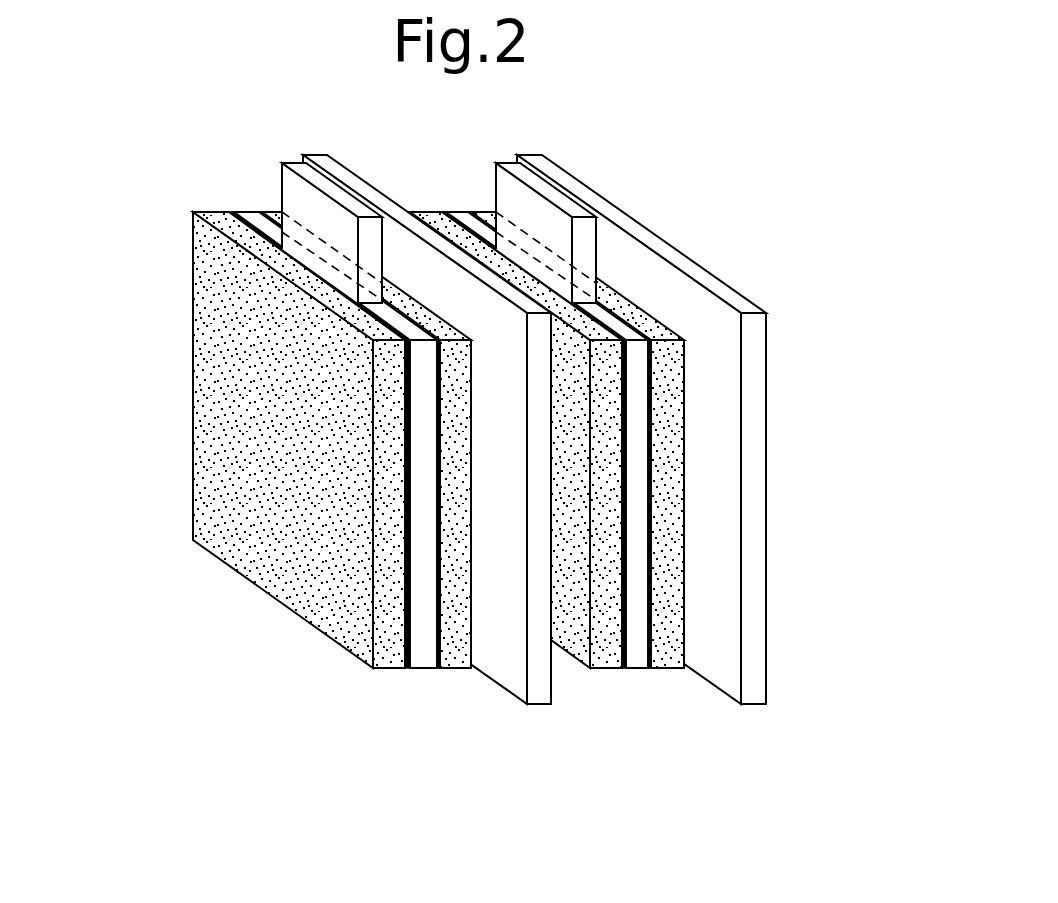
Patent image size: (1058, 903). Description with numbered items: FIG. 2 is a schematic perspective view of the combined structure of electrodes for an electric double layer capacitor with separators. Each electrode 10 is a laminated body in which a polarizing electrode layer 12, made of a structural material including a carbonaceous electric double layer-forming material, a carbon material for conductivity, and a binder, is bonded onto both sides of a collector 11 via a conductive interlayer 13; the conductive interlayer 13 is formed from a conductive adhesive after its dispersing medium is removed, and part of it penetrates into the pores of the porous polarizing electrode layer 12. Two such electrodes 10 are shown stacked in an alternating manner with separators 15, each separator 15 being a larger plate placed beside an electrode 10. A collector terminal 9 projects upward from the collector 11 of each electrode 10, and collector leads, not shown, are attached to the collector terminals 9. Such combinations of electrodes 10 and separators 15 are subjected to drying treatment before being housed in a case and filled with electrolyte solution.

The collector terminal 9 is at (287, 190).
The electrode 10 is at (511, 532).
The collector 11 is at (420, 662).
The polarizing electrode layer 12 is at (390, 662).
The conductive interlayer 13 is at (407, 663).
The separator 15 is at (512, 688).